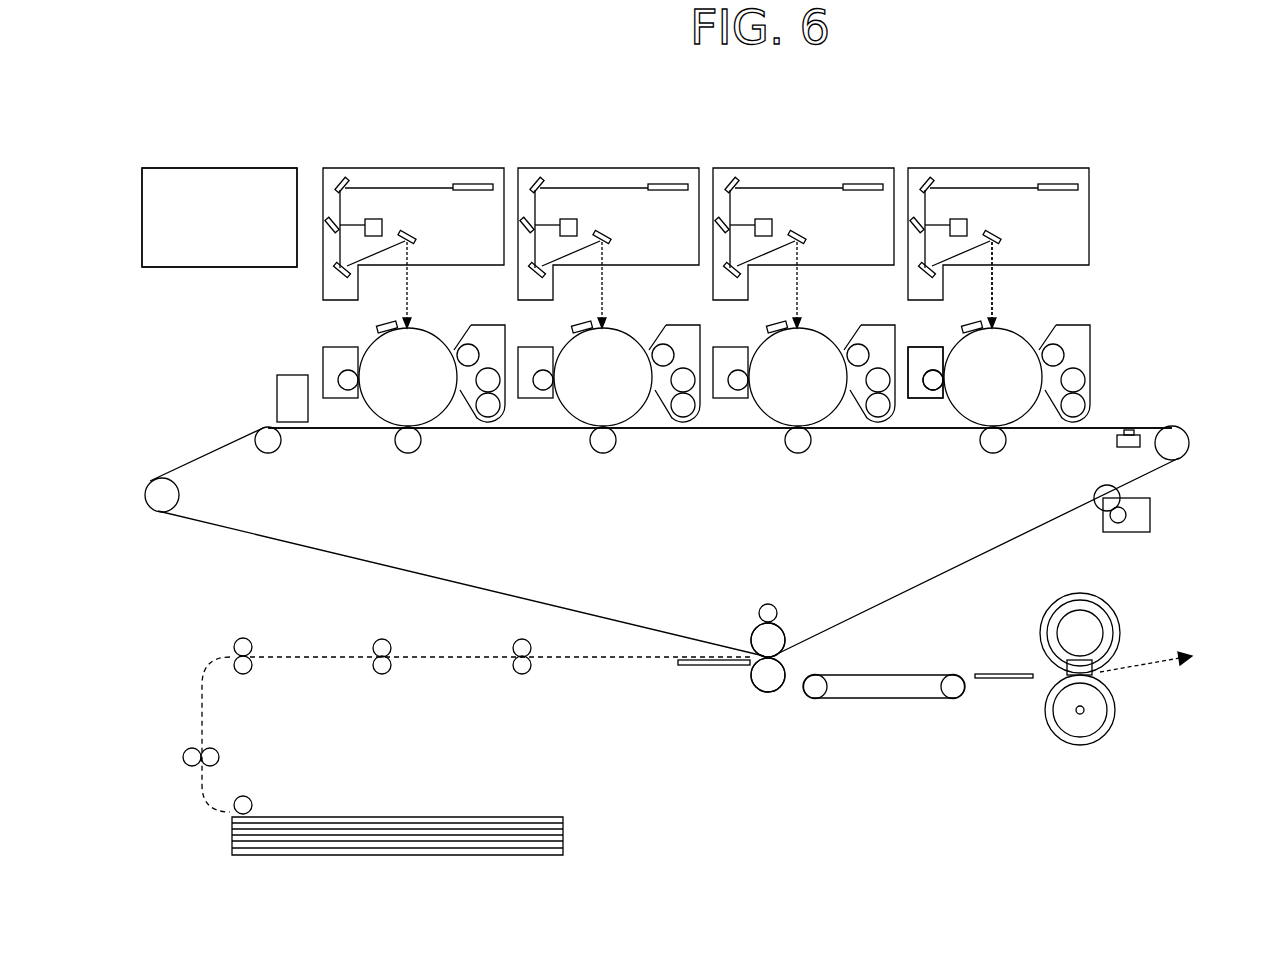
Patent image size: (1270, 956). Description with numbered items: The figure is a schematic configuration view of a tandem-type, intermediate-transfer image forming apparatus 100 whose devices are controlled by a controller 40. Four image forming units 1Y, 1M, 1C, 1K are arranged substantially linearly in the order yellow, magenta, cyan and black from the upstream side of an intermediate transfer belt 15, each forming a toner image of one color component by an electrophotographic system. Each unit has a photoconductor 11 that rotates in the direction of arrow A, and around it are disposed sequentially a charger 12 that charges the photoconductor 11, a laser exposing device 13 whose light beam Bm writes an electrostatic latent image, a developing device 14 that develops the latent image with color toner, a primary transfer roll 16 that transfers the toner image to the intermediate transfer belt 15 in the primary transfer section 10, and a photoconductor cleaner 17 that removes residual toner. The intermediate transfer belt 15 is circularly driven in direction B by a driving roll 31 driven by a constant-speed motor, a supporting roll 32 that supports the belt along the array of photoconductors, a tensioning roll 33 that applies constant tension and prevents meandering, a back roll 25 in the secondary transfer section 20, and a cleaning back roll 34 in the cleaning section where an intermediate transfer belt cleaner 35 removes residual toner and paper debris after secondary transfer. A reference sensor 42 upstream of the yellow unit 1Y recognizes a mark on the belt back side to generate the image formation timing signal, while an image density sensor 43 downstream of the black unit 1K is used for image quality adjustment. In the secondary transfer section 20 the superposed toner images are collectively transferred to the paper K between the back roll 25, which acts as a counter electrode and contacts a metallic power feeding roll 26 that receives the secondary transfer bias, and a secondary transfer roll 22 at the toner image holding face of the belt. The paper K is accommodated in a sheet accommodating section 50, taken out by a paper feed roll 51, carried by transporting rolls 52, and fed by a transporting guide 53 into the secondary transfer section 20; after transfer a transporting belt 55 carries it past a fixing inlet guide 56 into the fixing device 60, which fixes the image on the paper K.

The image forming apparatus 100 is at (1170, 172).
The controller 40 is at (218, 168).
The image forming unit 1K is at (408, 152).
The image forming unit 1C is at (603, 152).
The image forming unit 1M is at (798, 152).
The image forming unit 1Y is at (1017, 305).
The laser exposing device 13 is at (1090, 205).
The photoconductor 11 is at (1030, 340).
The charger 12 is at (962, 325).
The developing device 14 is at (1090, 350).
The photoconductor cleaner 17 is at (940, 398).
The primary transfer roll 16 is at (993, 453).
The light beam Bm is at (993, 290).
The rotational direction of the photoconductor A is at (1025, 392).
The image density sensor 43 is at (277, 378).
The primary transfer section 10 is at (966, 448).
The intermediate transfer belt 15 is at (574, 612).
The tensioning roll 33 is at (180, 488).
The supporting roll 32 is at (272, 453).
The driving roll 31 is at (1189, 443).
The reference sensor 42 is at (1133, 450).
The cleaning back roll 34 is at (1095, 495).
The intermediate transfer belt cleaner 35 is at (1150, 515).
The direction of belt rotation B is at (732, 473).
The secondary transfer section 20 is at (790, 657).
The back roll 25 is at (786, 630).
The power feeding roll 26 is at (761, 605).
The secondary transfer roll 22 is at (765, 692).
The transporting guide 53 is at (690, 665).
The transporting belt 55 is at (890, 700).
The fixing inlet guide 56 is at (1005, 680).
The fixing device 60 is at (1150, 632).
The paper K is at (405, 815).
The sheet accommodating section 50 is at (563, 838).
The paper feed roll 51 is at (248, 795).
The transporting roll 52 is at (200, 745).